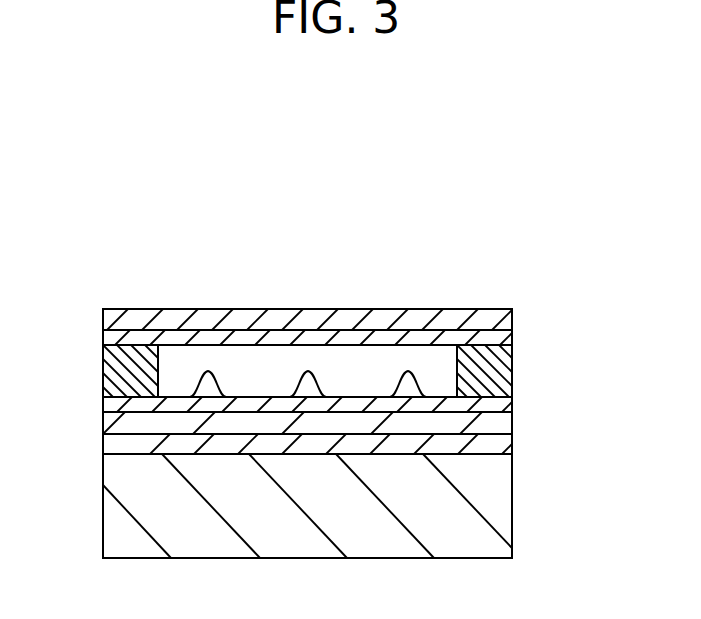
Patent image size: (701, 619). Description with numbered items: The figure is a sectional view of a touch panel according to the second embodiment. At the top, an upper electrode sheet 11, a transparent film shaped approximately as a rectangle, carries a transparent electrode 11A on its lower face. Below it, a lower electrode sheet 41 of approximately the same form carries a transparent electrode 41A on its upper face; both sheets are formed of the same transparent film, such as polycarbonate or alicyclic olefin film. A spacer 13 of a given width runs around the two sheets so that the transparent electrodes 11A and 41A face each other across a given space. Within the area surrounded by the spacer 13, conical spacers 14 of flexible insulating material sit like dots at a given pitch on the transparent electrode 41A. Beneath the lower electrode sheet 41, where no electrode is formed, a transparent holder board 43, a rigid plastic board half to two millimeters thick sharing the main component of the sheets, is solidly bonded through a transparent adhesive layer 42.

The upper electrode sheet 11 is at (455, 317).
The transparent electrode 11A is at (482, 338).
The spacer 13 is at (482, 363).
The conical spacers 14 is at (312, 395).
The transparent electrode 41A is at (483, 409).
The lower electrode sheet 41 is at (483, 427).
The transparent adhesive layer 42 is at (138, 441).
The transparent holder board 43 is at (493, 510).